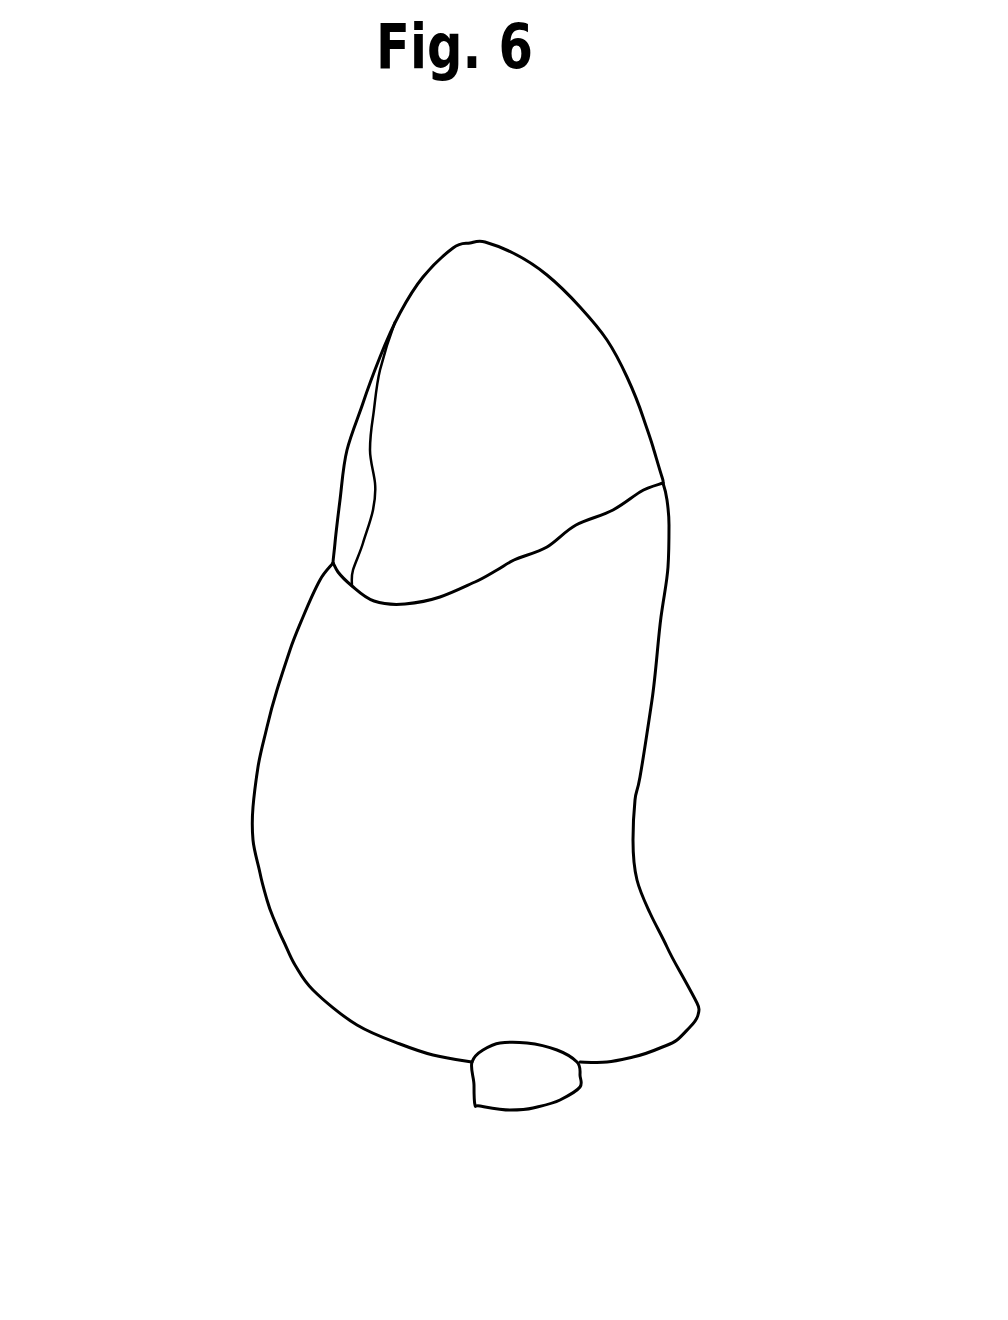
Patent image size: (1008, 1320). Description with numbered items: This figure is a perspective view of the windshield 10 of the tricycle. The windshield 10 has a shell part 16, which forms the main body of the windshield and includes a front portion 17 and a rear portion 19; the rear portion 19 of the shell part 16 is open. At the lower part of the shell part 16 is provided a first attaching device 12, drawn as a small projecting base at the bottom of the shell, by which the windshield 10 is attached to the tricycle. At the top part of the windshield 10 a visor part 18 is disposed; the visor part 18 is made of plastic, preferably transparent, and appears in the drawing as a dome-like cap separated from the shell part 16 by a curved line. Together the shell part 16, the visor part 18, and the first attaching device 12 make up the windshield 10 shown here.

The windshield 10 is at (887, 128).
The first attaching device 12 is at (522, 1088).
The shell part 16 is at (297, 903).
The front portion 17 is at (350, 943).
The visor part 18 is at (395, 317).
The rear portion 19 is at (640, 777).